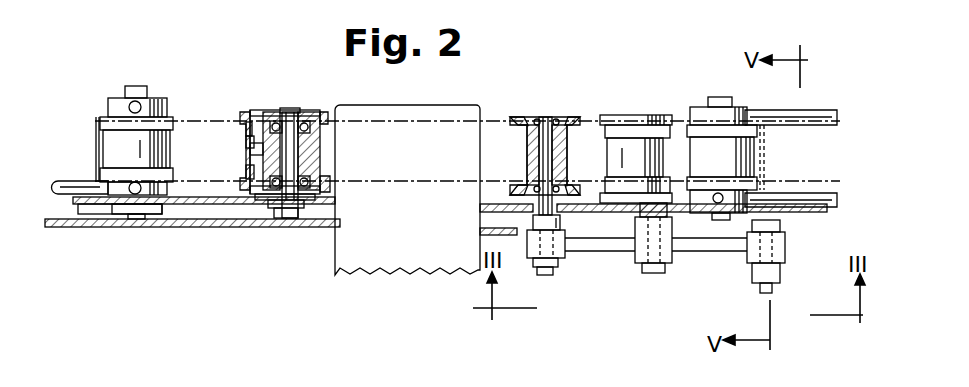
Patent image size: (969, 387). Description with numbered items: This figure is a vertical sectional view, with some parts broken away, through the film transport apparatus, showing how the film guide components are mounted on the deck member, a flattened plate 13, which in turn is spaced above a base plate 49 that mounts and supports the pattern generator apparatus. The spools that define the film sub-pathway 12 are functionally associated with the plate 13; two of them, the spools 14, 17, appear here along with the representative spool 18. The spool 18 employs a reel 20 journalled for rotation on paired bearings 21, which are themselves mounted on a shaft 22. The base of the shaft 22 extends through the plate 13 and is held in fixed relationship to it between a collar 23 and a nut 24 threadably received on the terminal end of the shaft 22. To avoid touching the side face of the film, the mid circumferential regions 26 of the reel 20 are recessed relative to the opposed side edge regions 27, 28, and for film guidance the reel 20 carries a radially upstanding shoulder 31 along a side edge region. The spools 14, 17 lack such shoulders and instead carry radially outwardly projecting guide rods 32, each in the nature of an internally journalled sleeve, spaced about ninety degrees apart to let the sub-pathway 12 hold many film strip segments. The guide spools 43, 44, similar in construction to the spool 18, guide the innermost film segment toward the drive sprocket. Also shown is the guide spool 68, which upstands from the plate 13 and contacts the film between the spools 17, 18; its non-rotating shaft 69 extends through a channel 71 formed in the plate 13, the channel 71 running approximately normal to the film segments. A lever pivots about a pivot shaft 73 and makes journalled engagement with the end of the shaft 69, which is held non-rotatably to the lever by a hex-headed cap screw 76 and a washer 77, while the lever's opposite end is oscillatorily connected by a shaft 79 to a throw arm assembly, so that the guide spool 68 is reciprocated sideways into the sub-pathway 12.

The film sub-pathway 12 is at (497, 106).
The plate 13 is at (186, 206).
The spool 14 is at (118, 104).
The spool 17 is at (706, 114).
The spool 18 is at (271, 104).
The reel 20 is at (240, 108).
The bearings 21 is at (312, 118).
The shaft 22 is at (290, 110).
The collar 23 is at (272, 208).
The nut 24 is at (296, 220).
The mid circumferential regions 26 is at (246, 150).
The side edge region 27 is at (253, 128).
The side edge region 28 is at (248, 178).
The shoulder 31 is at (252, 200).
The guide rod 32 is at (73, 184).
The guide spool 43 is at (246, 112).
The guide spool 44 is at (636, 116).
The base plate 49 is at (90, 228).
The guide spool 68 is at (524, 116).
The shaft 69 is at (549, 120).
The channel 71 is at (560, 222).
The pivot shaft 73 is at (652, 274).
The hex-headed cap screw 76 is at (543, 276).
The washer 77 is at (560, 262).
The shaft 79 is at (786, 250).